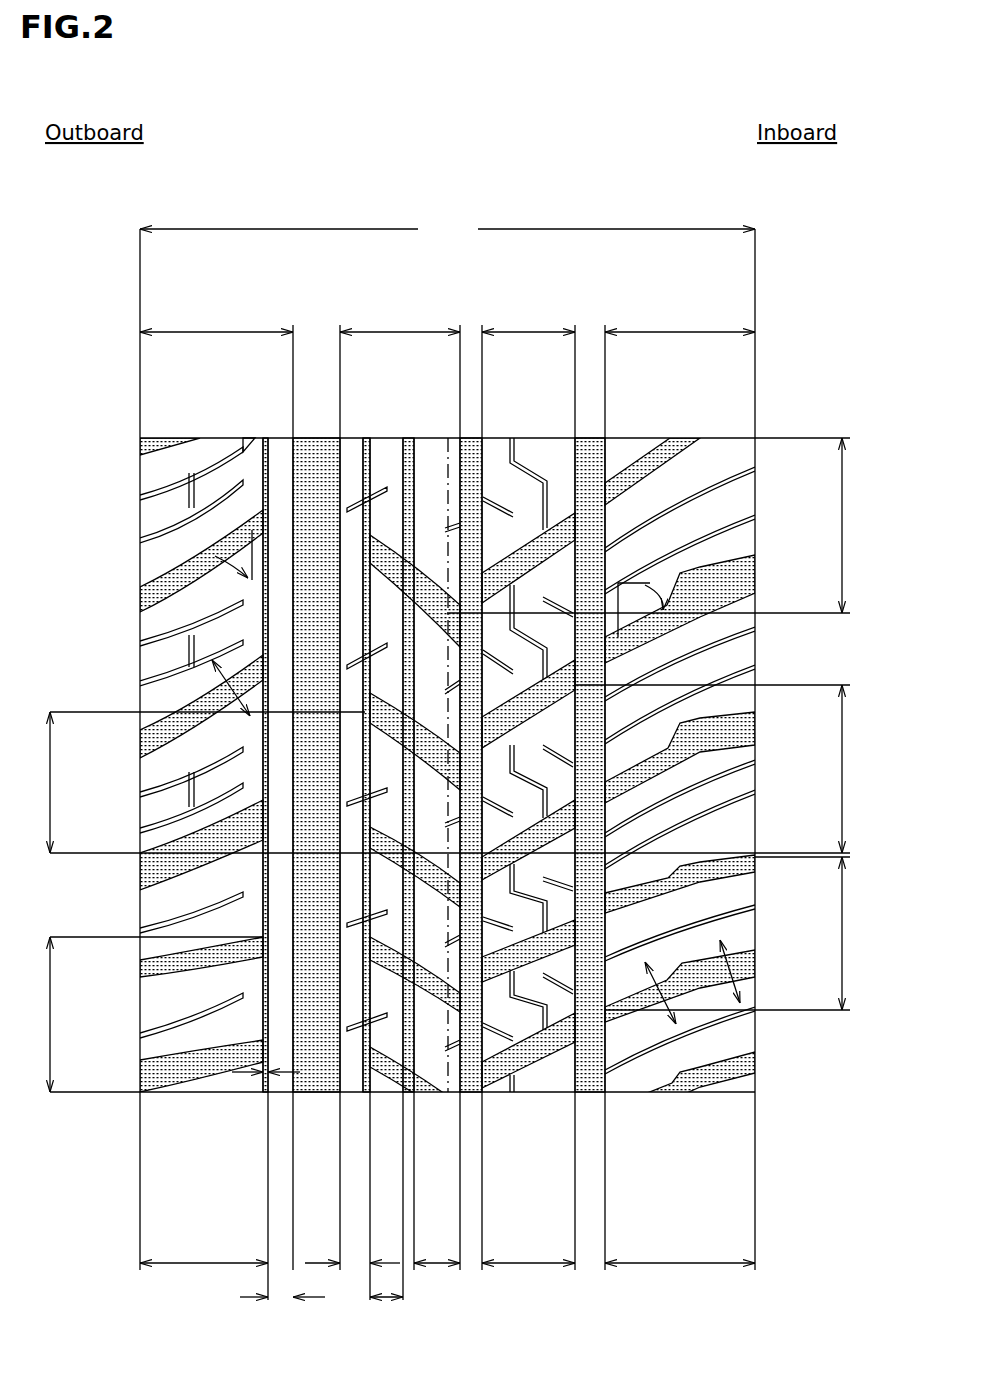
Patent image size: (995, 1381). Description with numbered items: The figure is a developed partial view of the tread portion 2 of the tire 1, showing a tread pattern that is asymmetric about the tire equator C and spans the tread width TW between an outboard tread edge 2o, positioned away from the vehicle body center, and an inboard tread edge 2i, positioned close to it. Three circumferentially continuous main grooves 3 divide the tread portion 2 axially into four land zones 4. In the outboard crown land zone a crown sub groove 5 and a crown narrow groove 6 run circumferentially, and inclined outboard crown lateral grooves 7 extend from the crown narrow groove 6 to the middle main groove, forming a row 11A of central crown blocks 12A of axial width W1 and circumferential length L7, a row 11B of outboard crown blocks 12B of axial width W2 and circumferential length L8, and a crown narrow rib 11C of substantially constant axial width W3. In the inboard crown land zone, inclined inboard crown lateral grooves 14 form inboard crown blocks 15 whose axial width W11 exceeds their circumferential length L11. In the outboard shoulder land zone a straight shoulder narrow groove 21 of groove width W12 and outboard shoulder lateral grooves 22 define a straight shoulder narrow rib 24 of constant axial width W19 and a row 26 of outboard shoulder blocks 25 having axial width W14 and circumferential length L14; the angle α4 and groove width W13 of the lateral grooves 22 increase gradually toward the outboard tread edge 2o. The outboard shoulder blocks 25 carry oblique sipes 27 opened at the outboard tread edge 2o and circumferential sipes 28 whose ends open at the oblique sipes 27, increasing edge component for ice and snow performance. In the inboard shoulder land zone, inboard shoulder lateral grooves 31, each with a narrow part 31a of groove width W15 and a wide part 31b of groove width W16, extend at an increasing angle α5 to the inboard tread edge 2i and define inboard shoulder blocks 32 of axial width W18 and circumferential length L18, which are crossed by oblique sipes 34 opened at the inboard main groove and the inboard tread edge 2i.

The pneumatic tire 1 is at (772, 262).
The tread portion 2 is at (770, 352).
The outboard tread edge 2o is at (140, 470).
The inboard tread edge 2i is at (755, 462).
The main grooves 3 is at (318, 455).
The land zones 4 is at (447, 316).
The crown sub groove 5 is at (413, 1050).
The crown narrow groove 6 is at (365, 1015).
The outboard crown lateral grooves 7 is at (400, 853).
The row of central crown blocks 11A is at (428, 485).
The row of outboard crown blocks 11B is at (383, 463).
The crown narrow rib 11C is at (353, 483).
The central crown block 12A is at (433, 815).
The outboard crown block 12B is at (388, 762).
The inboard crown lateral grooves 14 is at (543, 693).
The inboard crown block 15 is at (550, 572).
The shoulder narrow groove 21 is at (265, 1070).
The outboard shoulder lateral grooves 22 is at (165, 587).
The shoulder narrow rib 24 is at (282, 487).
The outboard shoulder block 25 is at (165, 617).
The row of outboard shoulder blocks 26 is at (197, 455).
The oblique sipes 27 is at (193, 460).
The circumferential direction sipes 28 is at (197, 505).
The inboard shoulder lateral grooves 31 is at (745, 1200).
The narrow part 31a is at (635, 1000).
The wide part 31b is at (700, 967).
The inboard shoulder block 32 is at (730, 498).
The oblique sipes 34 is at (683, 490).
The tire equator C is at (446, 749).
The tread width TW is at (447, 230).
The axial width of central crown blocks W1 is at (438, 1280).
The axial width of outboard crown blocks W2 is at (387, 1315).
The axial width of crown narrow rib W3 is at (352, 1280).
The axial width of inboard crown blocks W11 is at (528, 1280).
The groove width of shoulder narrow groove W12 is at (258, 1092).
The groove width of outboard shoulder lateral groove W13 is at (245, 722).
The axial width of outboard shoulder block W14 is at (204, 1265).
The groove width of narrow part W15 is at (658, 995).
The groove width of wide part W16 is at (733, 935).
The axial width of inboard shoulder block W18 is at (680, 1265).
The axial width of shoulder narrow rib W19 is at (282, 1315).
The circumferential length of central crown blocks L7 is at (651, 525).
The circumferential length of outboard crown blocks L8 is at (196, 782).
The circumferential length of inboard crown blocks L11 is at (456, 769).
The circumferential length of outboard shoulder block L14 is at (144, 1014).
The circumferential length of inboard shoulder block L18 is at (734, 933).